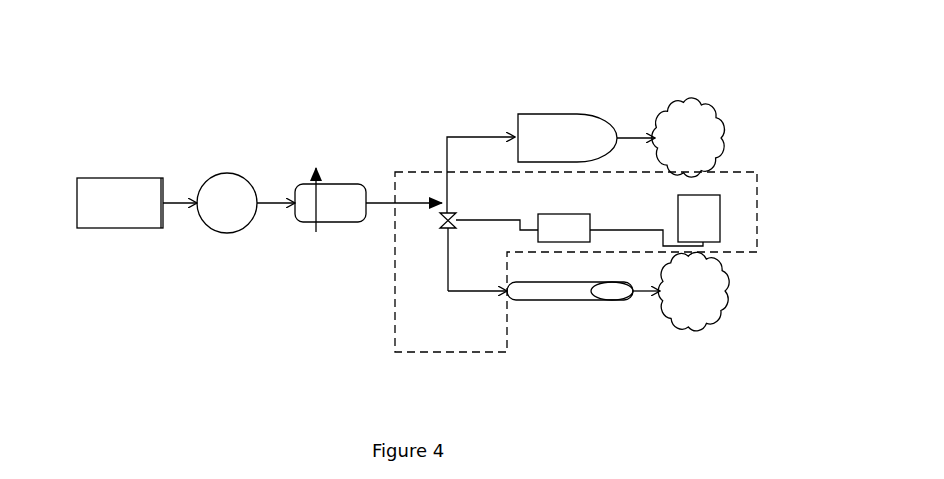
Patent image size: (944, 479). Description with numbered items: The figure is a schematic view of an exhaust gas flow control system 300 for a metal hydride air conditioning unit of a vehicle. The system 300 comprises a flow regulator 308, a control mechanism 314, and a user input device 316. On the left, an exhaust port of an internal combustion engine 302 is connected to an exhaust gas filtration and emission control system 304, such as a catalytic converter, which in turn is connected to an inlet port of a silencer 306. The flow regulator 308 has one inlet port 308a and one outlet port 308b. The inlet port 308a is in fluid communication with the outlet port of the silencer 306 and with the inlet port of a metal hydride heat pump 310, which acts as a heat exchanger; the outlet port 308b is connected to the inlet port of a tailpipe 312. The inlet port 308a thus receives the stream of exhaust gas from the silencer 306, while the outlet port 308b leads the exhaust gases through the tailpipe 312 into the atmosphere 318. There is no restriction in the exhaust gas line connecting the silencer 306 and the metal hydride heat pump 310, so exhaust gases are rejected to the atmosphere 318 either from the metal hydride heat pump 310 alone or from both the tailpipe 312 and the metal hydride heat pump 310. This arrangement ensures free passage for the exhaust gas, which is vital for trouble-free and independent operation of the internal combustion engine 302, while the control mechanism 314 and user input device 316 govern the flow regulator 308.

The exhaust gas flow control system 300 is at (608, 78).
The internal combustion engine 302 is at (126, 229).
The exhaust gas filtration and emission control system 304 is at (224, 234).
The silencer 306 is at (330, 217).
The flow regulator 308 is at (440, 224).
The inlet port 308a is at (440, 210).
The outlet port 308b is at (438, 236).
The metal hydride heat pump 310 is at (552, 107).
The tailpipe 312 is at (583, 265).
The control mechanism 314 is at (552, 210).
The user input device 316 is at (678, 200).
The atmosphere 318 is at (712, 105).